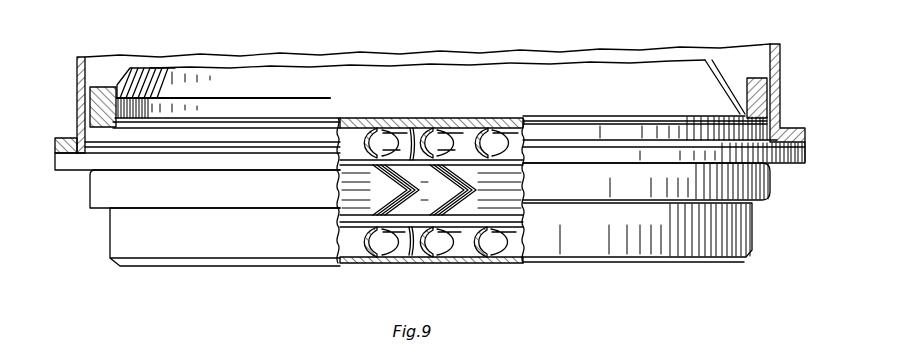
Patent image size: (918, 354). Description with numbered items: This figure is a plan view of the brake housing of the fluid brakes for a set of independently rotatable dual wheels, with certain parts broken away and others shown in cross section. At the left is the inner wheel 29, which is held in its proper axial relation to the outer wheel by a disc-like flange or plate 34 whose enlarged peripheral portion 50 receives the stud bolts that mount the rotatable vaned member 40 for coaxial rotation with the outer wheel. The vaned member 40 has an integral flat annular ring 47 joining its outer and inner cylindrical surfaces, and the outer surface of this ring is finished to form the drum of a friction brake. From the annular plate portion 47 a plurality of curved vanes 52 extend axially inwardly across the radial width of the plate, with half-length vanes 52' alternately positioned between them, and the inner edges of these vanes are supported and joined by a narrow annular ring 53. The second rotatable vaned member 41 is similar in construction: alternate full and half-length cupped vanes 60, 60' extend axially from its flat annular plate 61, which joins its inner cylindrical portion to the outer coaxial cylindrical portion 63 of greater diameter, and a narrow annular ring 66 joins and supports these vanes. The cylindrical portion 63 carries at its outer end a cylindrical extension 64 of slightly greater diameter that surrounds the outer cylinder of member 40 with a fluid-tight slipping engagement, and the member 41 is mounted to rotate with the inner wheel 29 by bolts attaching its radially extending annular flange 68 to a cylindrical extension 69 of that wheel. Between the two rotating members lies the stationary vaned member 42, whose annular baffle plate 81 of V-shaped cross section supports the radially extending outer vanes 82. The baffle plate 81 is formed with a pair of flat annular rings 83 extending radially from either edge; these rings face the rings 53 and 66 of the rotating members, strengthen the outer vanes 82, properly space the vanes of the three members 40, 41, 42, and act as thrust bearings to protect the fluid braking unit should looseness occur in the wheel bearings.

The inner wheel 29 is at (80, 57).
The flange or plate 34 is at (152, 76).
The enlarged peripheral portion 50 is at (100, 105).
The cylindrical extension 69 is at (64, 137).
The annular flange 68 is at (66, 171).
The cylindrical extension 64 is at (93, 199).
The outer coaxial cylindrical portion 63 is at (110, 248).
The flat annular ring 47 is at (346, 121).
The half-length vanes 52' is at (442, 125).
The narrow annular ring 53 is at (413, 130).
The curved vanes 52 is at (441, 125).
The rotatable vaned member 40 is at (556, 118).
The stationary vaned member 42 is at (506, 193).
The flat annular rings 83 is at (340, 181).
The annular baffle plate 81 is at (340, 197).
The outer vanes 82 is at (340, 209).
The flat annular plate 61 is at (346, 261).
The half-length cupped vanes 60' is at (438, 257).
The narrow annular ring 66 is at (411, 246).
The full-length cupped vanes 60 is at (440, 257).
The rotatable vaned member 41 is at (580, 265).